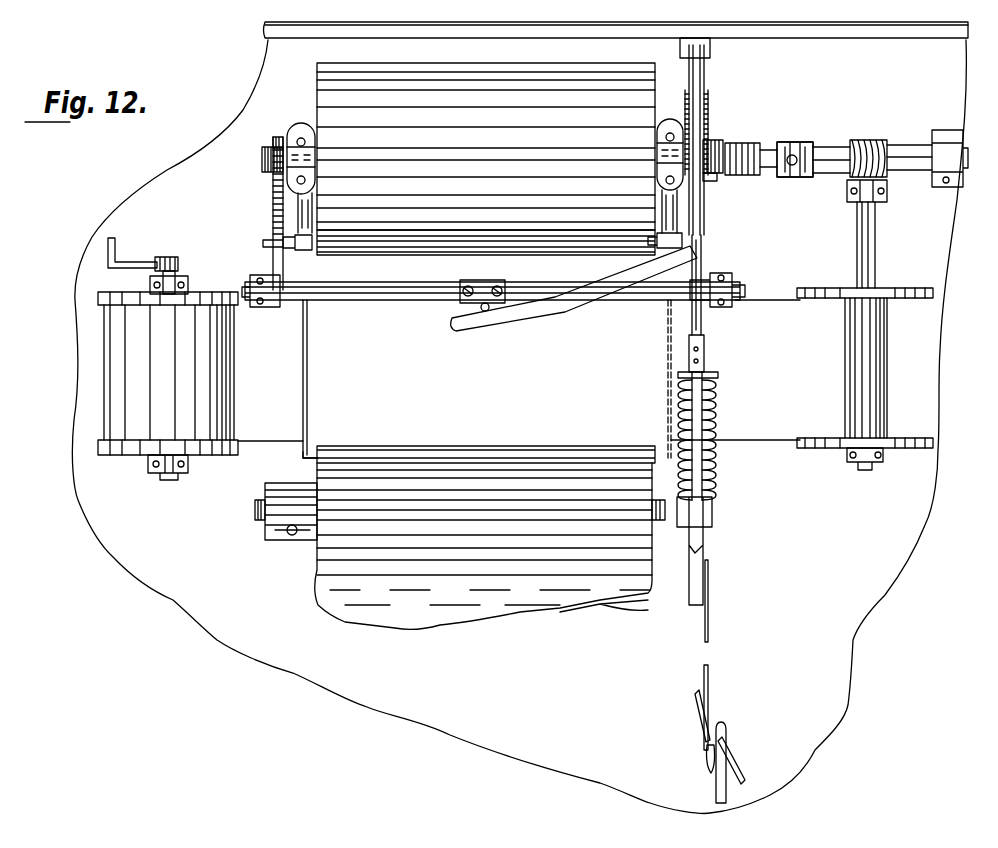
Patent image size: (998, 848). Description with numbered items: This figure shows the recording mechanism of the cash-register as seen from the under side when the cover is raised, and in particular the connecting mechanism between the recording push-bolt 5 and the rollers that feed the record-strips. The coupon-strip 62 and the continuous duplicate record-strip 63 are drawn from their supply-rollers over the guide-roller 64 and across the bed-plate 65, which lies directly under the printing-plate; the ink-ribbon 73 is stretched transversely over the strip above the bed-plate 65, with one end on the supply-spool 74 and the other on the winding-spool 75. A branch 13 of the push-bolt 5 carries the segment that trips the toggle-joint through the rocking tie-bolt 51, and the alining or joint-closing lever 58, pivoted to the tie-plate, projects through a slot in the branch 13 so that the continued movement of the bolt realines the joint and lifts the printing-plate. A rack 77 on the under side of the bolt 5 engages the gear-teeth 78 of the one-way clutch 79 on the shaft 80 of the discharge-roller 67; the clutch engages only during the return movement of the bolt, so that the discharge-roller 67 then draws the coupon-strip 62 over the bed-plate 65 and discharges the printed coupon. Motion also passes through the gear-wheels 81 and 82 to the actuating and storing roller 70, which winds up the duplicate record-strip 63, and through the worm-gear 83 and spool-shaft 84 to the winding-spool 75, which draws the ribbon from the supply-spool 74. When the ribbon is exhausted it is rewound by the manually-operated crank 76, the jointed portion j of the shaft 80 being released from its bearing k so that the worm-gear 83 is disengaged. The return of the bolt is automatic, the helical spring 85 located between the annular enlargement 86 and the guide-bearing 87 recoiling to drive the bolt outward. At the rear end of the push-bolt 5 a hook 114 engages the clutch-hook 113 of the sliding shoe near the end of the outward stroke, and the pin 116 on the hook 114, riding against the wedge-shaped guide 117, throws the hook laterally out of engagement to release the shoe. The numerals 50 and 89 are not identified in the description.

The recording push-bolt 5 is at (693, 605).
The branch of the recording push-bolt 13 is at (697, 334).
The bar 50 is at (366, 298).
The rocking tie-bolt 51 is at (640, 300).
The alining or joint-closing lever 58 is at (533, 308).
The coupon-strip 62 is at (460, 546).
The duplicate record-strip 63 is at (486, 356).
The guide-roller 64 is at (300, 462).
The bed-plate 65 is at (519, 379).
The discharge-roller 67 is at (486, 146).
The actuating and storing roller 70 is at (306, 257).
The ink-ribbon 73 is at (450, 365).
The supply-spool 74 is at (206, 458).
The winding-spool 75 is at (890, 336).
The manually-operated crank 76 is at (115, 248).
The rack 77 is at (707, 186).
The gear-teeth 78 is at (706, 182).
The one-way clutch 79 is at (712, 175).
The shaft of the discharge-roller 80 is at (262, 160).
The gear-wheel 81 is at (273, 176).
The gear-wheel 82 is at (273, 228).
The worm-gear 83 is at (874, 143).
The spool-shaft 84 is at (873, 234).
The helical spring 85 is at (712, 404).
The annular enlargement 86 is at (718, 375).
The guide-bearing 87 is at (706, 505).
The drive shaft 89 is at (778, 155).
The clutch-hook 113 is at (724, 744).
The push-bolt hook 114 is at (707, 758).
The pin 116 is at (702, 745).
The wedge-shaped guide 117 is at (732, 768).
The jointed portion of the shaft j is at (796, 148).
The bearing k is at (950, 168).